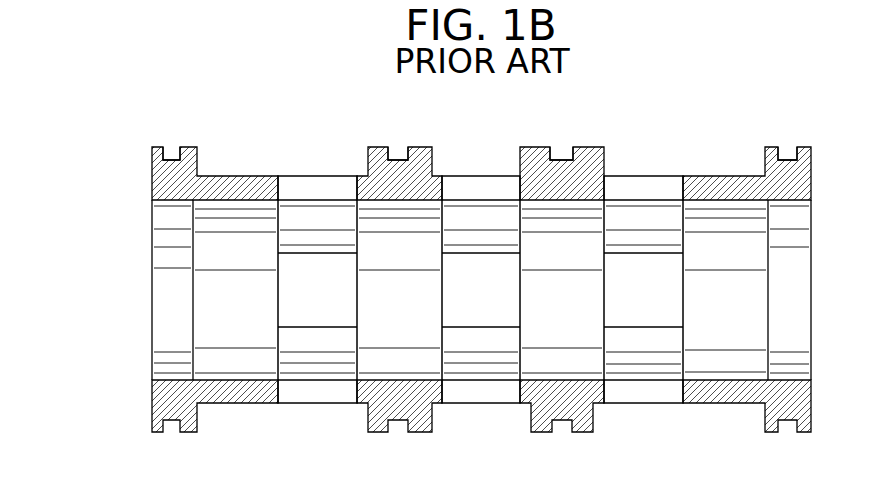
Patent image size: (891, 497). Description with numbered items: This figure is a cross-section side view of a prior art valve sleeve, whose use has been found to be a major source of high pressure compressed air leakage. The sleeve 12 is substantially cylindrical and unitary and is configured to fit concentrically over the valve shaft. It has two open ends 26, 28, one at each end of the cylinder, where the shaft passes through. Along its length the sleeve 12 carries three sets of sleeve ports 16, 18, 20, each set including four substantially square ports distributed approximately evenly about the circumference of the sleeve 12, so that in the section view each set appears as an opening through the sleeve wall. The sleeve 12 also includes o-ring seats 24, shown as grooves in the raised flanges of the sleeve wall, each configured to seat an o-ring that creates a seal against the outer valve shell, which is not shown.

The sleeve 12 is at (811, 178).
The sleeve ports 16 is at (314, 176).
The sleeve ports 18 is at (477, 176).
The sleeve ports 20 is at (640, 176).
The o-ring seats 24 is at (172, 160).
The open end 26 is at (824, 200).
The open end 28 is at (137, 200).